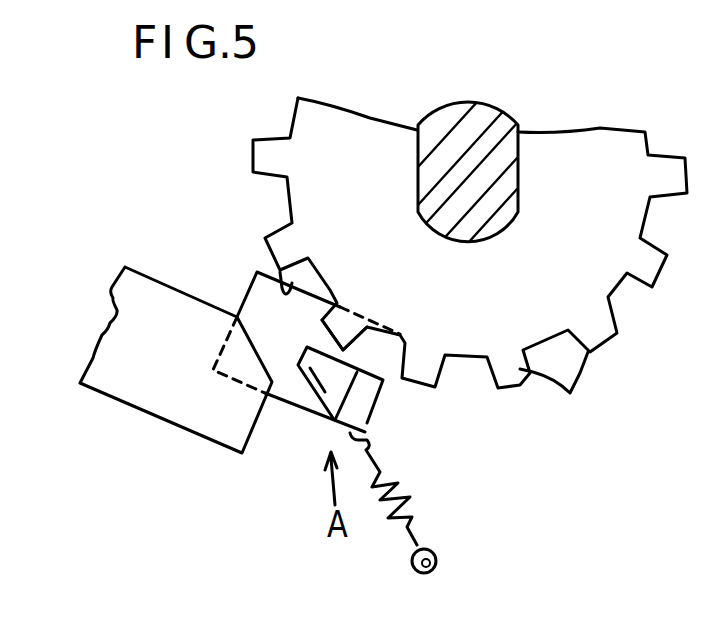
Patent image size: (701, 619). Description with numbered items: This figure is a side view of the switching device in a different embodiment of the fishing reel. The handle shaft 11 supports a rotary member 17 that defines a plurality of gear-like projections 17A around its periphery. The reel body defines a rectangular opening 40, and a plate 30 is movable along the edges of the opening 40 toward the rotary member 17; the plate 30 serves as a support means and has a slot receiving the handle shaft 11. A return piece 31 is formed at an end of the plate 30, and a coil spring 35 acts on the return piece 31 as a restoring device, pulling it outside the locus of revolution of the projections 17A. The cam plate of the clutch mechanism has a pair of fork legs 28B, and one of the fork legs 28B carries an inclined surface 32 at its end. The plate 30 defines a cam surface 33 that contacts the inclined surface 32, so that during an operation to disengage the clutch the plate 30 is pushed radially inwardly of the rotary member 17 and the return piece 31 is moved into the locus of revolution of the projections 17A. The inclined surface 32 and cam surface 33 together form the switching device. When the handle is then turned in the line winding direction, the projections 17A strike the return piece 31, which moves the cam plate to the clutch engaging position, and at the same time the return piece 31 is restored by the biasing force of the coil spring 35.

The handle shaft 11 is at (508, 206).
The rotary member 17 is at (595, 282).
The gear-like projections 17A is at (568, 395).
The fork legs 28B is at (150, 280).
The plate 30 is at (320, 300).
The return piece 31 is at (362, 402).
The inclined surface 32 is at (250, 288).
The cam surface 33 is at (326, 395).
The coil spring 35 is at (405, 498).
The rectangular opening 40 is at (283, 288).